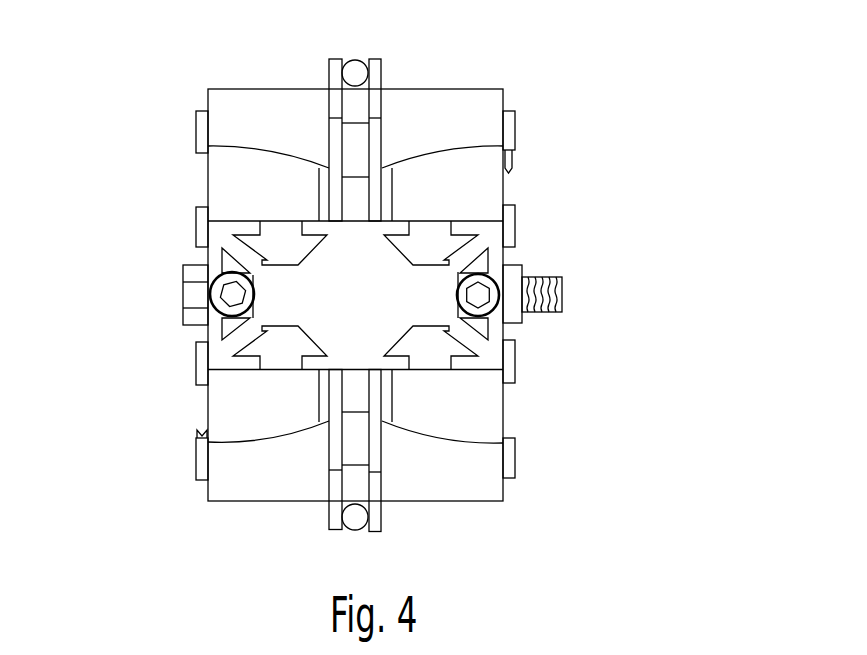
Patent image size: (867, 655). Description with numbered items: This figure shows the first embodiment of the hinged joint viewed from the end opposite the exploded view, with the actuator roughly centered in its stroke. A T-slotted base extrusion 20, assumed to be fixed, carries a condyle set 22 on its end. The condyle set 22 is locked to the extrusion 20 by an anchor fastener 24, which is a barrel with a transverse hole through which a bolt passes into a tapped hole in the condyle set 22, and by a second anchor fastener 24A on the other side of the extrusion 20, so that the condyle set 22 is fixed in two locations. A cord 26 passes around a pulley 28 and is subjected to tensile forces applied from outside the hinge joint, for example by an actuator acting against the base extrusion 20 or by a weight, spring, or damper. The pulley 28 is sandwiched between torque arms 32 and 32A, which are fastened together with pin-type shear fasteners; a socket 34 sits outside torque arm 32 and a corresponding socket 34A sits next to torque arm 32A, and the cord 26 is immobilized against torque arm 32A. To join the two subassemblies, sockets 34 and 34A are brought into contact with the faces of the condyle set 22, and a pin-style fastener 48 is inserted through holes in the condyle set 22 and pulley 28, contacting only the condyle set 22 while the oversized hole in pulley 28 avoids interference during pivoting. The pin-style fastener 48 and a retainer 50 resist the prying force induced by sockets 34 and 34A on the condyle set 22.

The T-slotted base extrusion 20 is at (430, 302).
The condyle set 22 is at (475, 178).
The anchor fastener 24 is at (487, 305).
The second anchor fastener 24A is at (233, 295).
The cord 26 is at (358, 73).
The pulley 28 is at (352, 458).
The torque arm 32 is at (378, 104).
The torque arm 32A is at (335, 140).
The socket 34 is at (445, 465).
The socket 34A is at (280, 470).
The pin-style fastener 48 is at (192, 297).
The retainer 50 is at (515, 292).